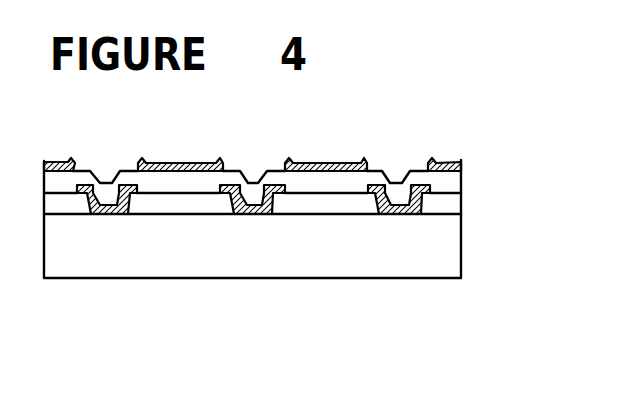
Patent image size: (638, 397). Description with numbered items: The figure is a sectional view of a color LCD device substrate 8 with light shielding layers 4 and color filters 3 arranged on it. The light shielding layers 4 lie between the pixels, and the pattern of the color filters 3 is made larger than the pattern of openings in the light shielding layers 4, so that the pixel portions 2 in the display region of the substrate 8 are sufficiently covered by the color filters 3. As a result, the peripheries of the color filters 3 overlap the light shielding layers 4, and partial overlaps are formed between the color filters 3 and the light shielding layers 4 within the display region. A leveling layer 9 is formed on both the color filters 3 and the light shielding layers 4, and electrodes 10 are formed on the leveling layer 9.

The pixel portion 2 is at (217, 285).
The color filter 3 is at (310, 214).
The light shielding layer 4 is at (398, 214).
The substrate 8 is at (450, 243).
The leveling layer 9 is at (375, 178).
The electrode 10 is at (173, 160).